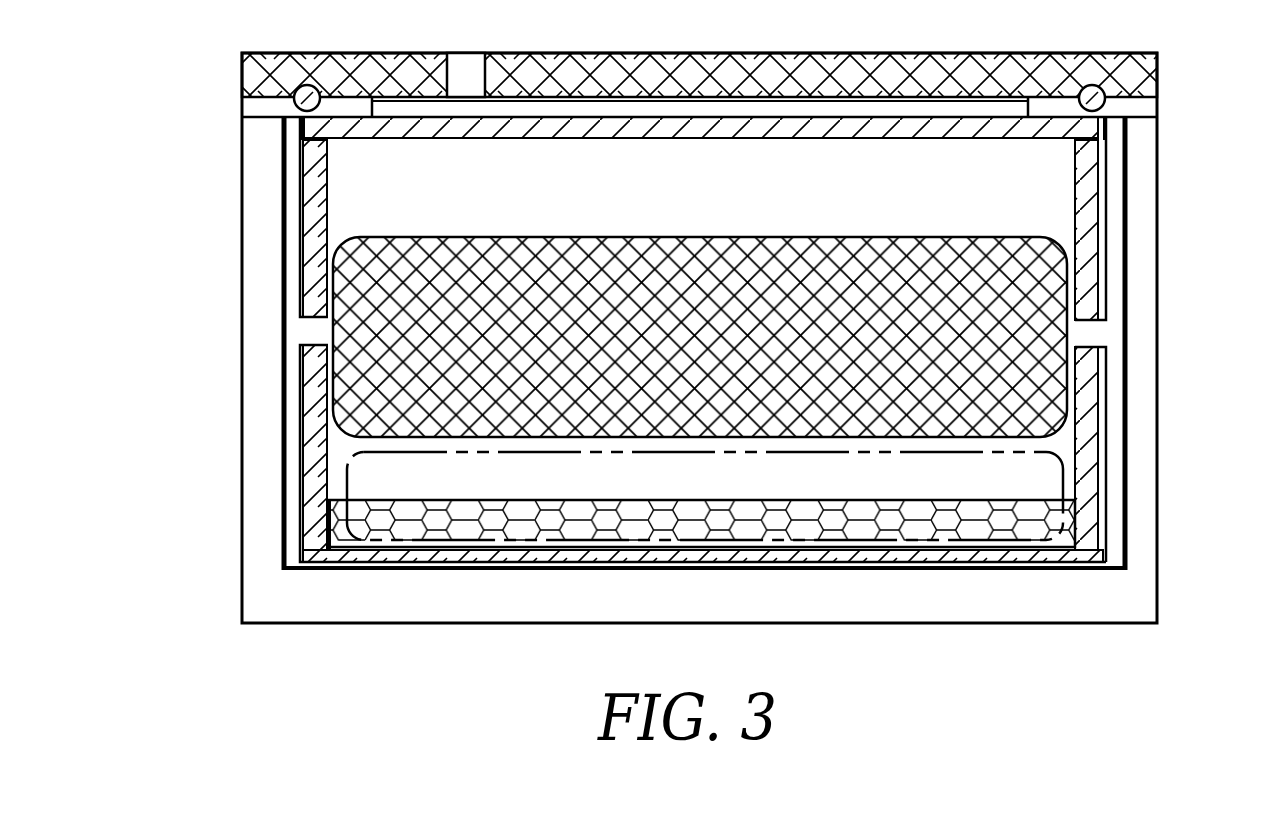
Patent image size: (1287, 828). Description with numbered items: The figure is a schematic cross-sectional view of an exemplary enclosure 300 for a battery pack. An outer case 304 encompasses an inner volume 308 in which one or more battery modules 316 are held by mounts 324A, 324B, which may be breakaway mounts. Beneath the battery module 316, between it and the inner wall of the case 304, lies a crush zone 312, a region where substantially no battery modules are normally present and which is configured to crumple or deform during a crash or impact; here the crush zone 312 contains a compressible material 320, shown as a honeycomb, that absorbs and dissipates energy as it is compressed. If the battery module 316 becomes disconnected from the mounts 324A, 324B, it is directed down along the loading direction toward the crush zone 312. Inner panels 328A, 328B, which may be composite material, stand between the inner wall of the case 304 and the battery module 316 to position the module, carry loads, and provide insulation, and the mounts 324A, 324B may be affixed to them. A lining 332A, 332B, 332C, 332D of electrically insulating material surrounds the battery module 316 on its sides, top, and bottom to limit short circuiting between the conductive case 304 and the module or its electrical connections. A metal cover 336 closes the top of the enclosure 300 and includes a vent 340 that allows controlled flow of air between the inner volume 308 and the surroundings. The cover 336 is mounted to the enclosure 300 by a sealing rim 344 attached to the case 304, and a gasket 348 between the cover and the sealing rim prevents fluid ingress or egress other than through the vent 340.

The enclosure 300 is at (163, 168).
The case 304 is at (240, 355).
The inner volume 308 is at (563, 208).
The crush zone 312 is at (445, 454).
The battery module 316 is at (820, 236).
The compressible material 320 is at (763, 498).
The mount 324A is at (310, 313).
The mount 324B is at (1106, 352).
The inner panel 328A is at (282, 238).
The inner panel 328B is at (1128, 258).
The lining 332A is at (330, 180).
The lining 332B is at (838, 141).
The lining 332C is at (1100, 193).
The lining 332D is at (778, 570).
The cover 336 is at (699, 50).
The vent 340 is at (450, 52).
The sealing rim 344 is at (250, 93).
The gasket 348 is at (1110, 106).